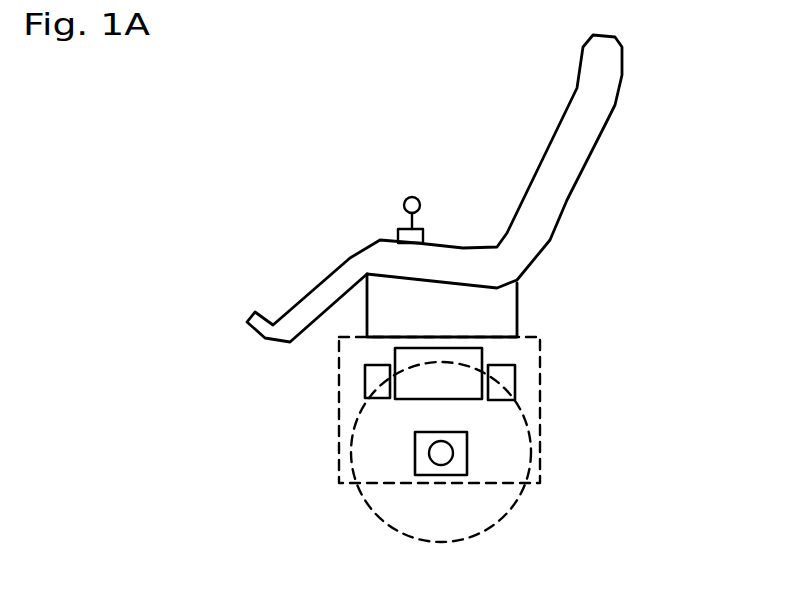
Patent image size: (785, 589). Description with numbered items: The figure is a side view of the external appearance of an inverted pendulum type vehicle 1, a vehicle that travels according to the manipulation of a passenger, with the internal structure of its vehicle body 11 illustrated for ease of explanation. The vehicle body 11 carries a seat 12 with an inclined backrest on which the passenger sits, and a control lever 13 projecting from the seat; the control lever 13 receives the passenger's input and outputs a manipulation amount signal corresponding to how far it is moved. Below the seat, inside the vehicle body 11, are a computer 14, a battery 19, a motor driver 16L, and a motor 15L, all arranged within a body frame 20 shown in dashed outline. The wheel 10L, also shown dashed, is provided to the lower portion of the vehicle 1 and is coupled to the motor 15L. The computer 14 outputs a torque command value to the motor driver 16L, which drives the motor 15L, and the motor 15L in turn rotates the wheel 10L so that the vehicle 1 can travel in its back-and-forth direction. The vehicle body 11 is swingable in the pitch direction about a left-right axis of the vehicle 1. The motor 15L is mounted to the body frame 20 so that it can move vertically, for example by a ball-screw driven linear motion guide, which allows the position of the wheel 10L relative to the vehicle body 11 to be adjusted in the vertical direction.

The inverted pendulum type vehicle 1 is at (440, 33).
The vehicle body 11 is at (479, 188).
The seat 12 is at (582, 163).
The control lever 13 is at (410, 200).
The computer 14 is at (363, 388).
The motor 15L is at (463, 448).
The motor driver 16L is at (503, 386).
The battery 19 is at (480, 356).
The body frame 20 is at (340, 448).
The wheel 10L is at (493, 520).